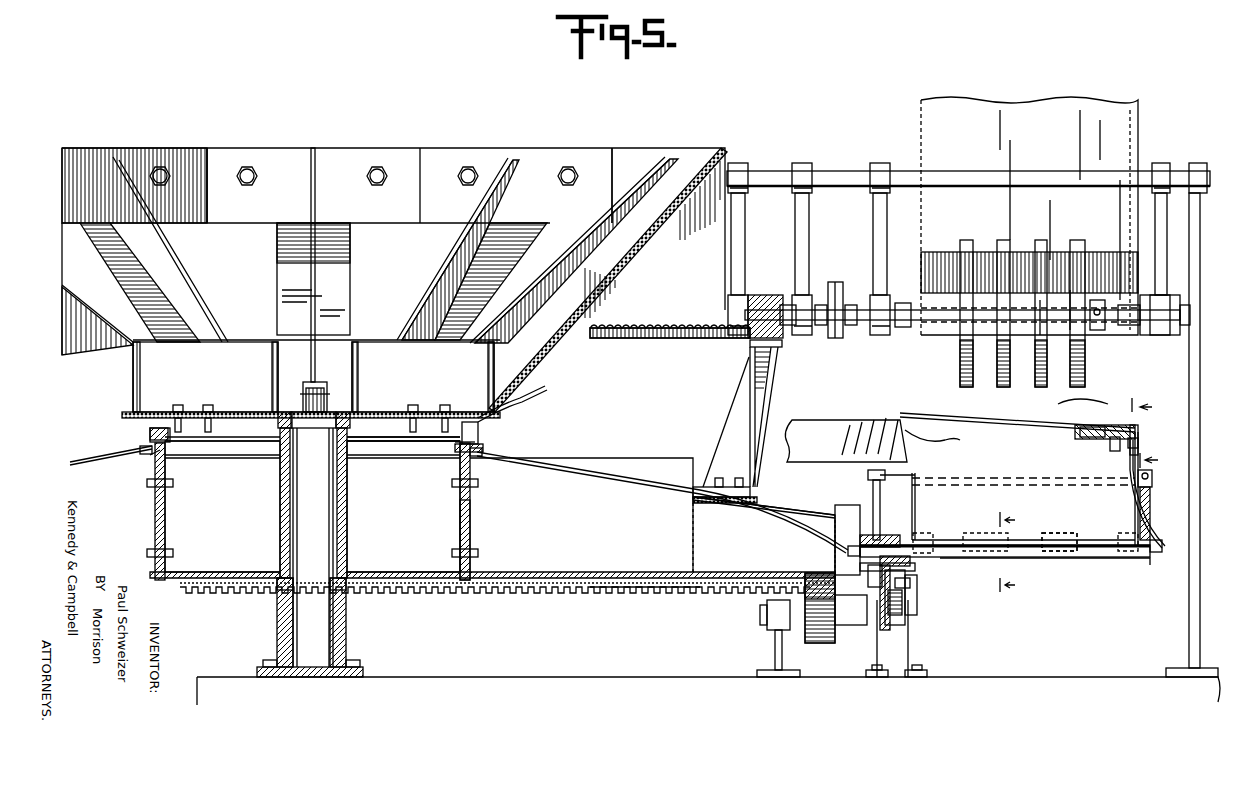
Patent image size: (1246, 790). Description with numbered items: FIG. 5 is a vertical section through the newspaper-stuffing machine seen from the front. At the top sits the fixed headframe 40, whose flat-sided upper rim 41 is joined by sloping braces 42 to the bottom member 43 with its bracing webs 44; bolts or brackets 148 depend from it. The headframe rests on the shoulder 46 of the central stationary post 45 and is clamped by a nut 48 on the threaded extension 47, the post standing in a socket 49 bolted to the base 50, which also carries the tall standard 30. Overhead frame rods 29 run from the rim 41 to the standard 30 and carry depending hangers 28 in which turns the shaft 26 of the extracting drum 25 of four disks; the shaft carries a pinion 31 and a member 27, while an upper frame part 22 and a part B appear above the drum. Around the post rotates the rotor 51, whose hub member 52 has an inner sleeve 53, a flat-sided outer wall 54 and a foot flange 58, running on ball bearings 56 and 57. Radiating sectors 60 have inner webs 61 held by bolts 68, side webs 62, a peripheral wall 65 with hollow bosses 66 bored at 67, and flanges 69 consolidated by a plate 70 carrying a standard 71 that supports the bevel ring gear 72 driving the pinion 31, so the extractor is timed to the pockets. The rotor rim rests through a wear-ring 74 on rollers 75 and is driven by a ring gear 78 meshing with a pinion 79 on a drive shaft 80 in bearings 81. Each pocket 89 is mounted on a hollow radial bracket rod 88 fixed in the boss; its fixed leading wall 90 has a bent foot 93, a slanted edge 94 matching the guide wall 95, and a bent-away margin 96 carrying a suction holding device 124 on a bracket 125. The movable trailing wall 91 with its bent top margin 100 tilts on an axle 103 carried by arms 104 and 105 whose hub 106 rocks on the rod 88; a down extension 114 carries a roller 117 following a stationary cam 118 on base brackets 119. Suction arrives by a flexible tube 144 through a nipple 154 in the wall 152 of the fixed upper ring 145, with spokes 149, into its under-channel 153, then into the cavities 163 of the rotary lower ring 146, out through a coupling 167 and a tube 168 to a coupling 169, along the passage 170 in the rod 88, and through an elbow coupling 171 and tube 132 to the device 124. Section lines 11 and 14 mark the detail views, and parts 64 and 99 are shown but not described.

The section line 11 is at (1151, 433).
The section line 14 is at (996, 552).
The supporting frame member 22 is at (1022, 98).
The extracting drum 25 is at (1001, 356).
The shaft 26 is at (795, 338).
The disc 27 is at (835, 282).
The depending hangers 28 is at (795, 218).
The overhead frame rod 29 is at (160, 168).
The tall standard 30 is at (1200, 252).
The pinion 31 is at (765, 295).
The headframe 40 is at (326, 124).
The upper rim 41 is at (207, 156).
The side pieces or braces 42 is at (275, 270).
The bottom member 43 is at (140, 410).
The bracing webs 44 is at (272, 388).
The central stationary post 45 is at (312, 523).
The shoulder 46 is at (304, 432).
The threaded extension 47 is at (314, 380).
The nut 48 is at (291, 412).
The foot member or upright socket 49 is at (344, 628).
The general base 50 is at (576, 676).
The rotor 51 is at (603, 508).
The central rotor member 52 is at (215, 509).
The inner cylindrical wall or sleeve 53 is at (346, 510).
The outer wall 54 is at (470, 502).
The ball bearing 56 is at (358, 404).
The ball bearing 57 is at (276, 594).
The foot flange 58 is at (468, 596).
The sectors 60 is at (643, 492).
The inner wall or web 61 is at (470, 522).
The side webs 62 is at (578, 596).
The wall 64 is at (836, 523).
The peripheral wall 65 is at (914, 524).
The boss 66 is at (910, 565).
The bore or aperture 67 is at (912, 538).
The bolts 68 is at (166, 486).
The shelf or flange 69 is at (758, 492).
The plate 70 is at (700, 488).
The upstanding bracket or standard 71 is at (748, 379).
The ring gear 72 is at (663, 326).
The wear-ring 74 is at (906, 580).
The supporting rollers 75 is at (908, 616).
The ring gear 78 is at (655, 596).
The driving pinion 79 is at (825, 643).
The drive shaft 80 is at (766, 622).
The bearings 81 is at (774, 634).
The pocket support or bracket rod 88 is at (1054, 560).
The pocket 89 is at (1083, 395).
The leading wall 90 is at (1090, 426).
The trailing wall 91 is at (1064, 428).
The bent foot portion 93 is at (1085, 560).
The slanted edge 94 is at (910, 438).
The supplemental guide wall 95 is at (896, 418).
The bent-away margin 96 is at (1130, 424).
The slot 99 is at (1113, 558).
The bent-over top marginal portion 100 is at (1017, 416).
The horizontal axle 103 is at (940, 472).
The swinging arm 104 is at (905, 498).
The swinging arm 105 is at (1150, 490).
The hub 106 is at (896, 540).
The down extension 114 is at (870, 574).
The roller 117 is at (902, 584).
The stationary cam 118 is at (888, 626).
The base brackets 119 is at (878, 640).
The suction holding device 124 is at (1146, 440).
The plate or bracket 125 is at (1101, 450).
The upwardly extending tube 132 is at (1152, 510).
The suction tube 144 is at (528, 410).
The upper fixed suction ring 145 is at (155, 434).
The lower rotary suction ring 146 is at (190, 440).
The bolts or brackets 148 is at (208, 404).
The spokes 149 is at (384, 442).
The horizontal wall 152 is at (482, 446).
The under-channel 153 is at (148, 441).
The threaded pipe or nipple 154 is at (478, 430).
The cavities 163 is at (152, 458).
The coupling 167 is at (140, 454).
The suction tube 168 is at (78, 460).
The coupling 169 is at (844, 546).
The suction passage 170 is at (953, 558).
The second coupling 171 is at (1162, 554).
The bank of fingers B is at (980, 252).